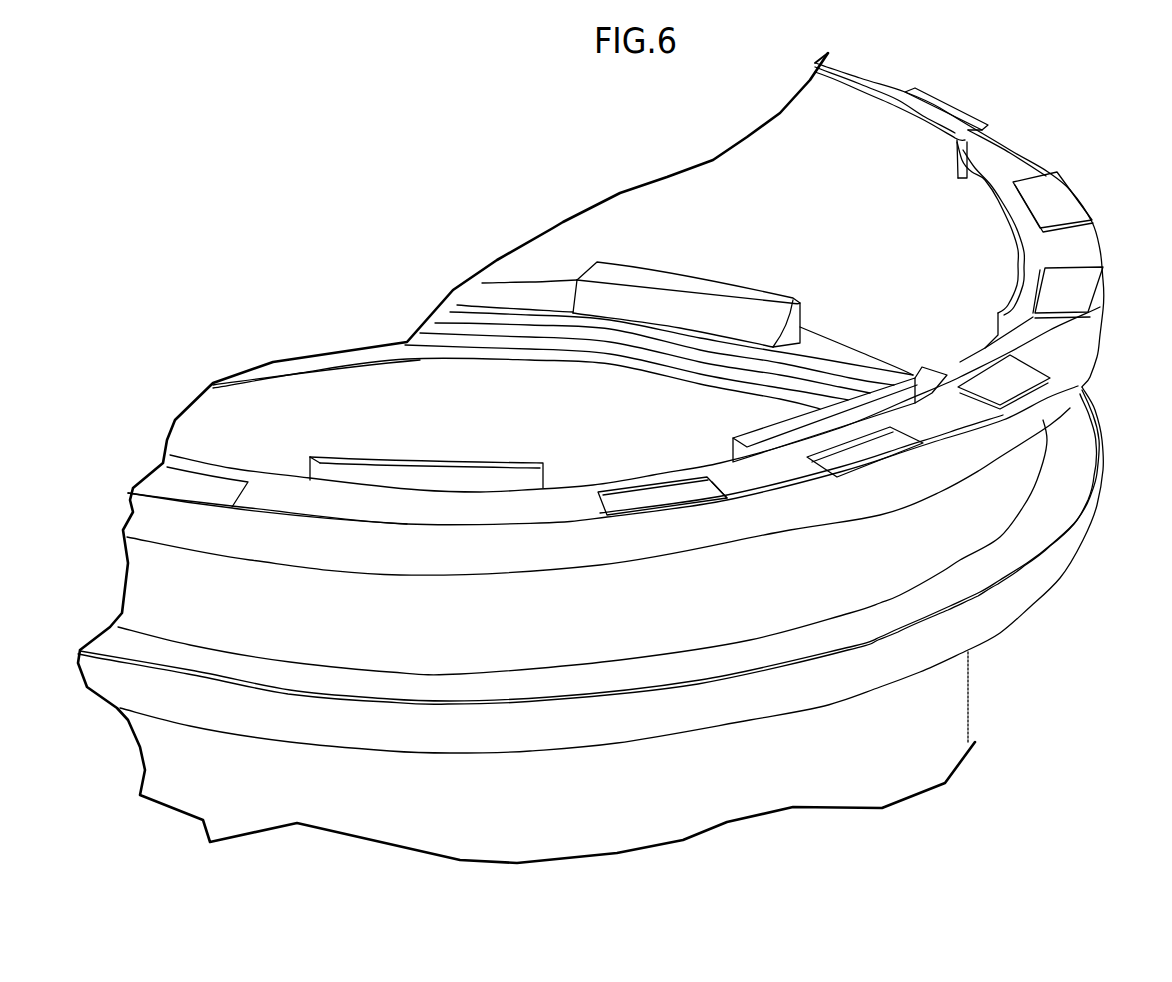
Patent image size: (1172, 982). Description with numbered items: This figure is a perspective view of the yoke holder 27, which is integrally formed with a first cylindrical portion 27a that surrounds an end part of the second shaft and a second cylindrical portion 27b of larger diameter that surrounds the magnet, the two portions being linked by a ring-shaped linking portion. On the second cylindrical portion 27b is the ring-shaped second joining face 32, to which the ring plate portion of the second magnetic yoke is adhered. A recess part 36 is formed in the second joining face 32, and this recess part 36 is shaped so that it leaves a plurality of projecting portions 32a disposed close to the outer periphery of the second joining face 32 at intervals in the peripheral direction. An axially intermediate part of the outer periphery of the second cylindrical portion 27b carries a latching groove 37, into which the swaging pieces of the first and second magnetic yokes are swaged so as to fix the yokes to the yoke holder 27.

The yoke holder 27 is at (968, 705).
The first cylindrical portion 27a is at (942, 697).
The second cylindrical portion 27b is at (1045, 580).
The second joining face 32 is at (645, 483).
The projecting portions 32a is at (707, 503).
The recess part 36 is at (508, 503).
The latching groove 37 is at (680, 673).